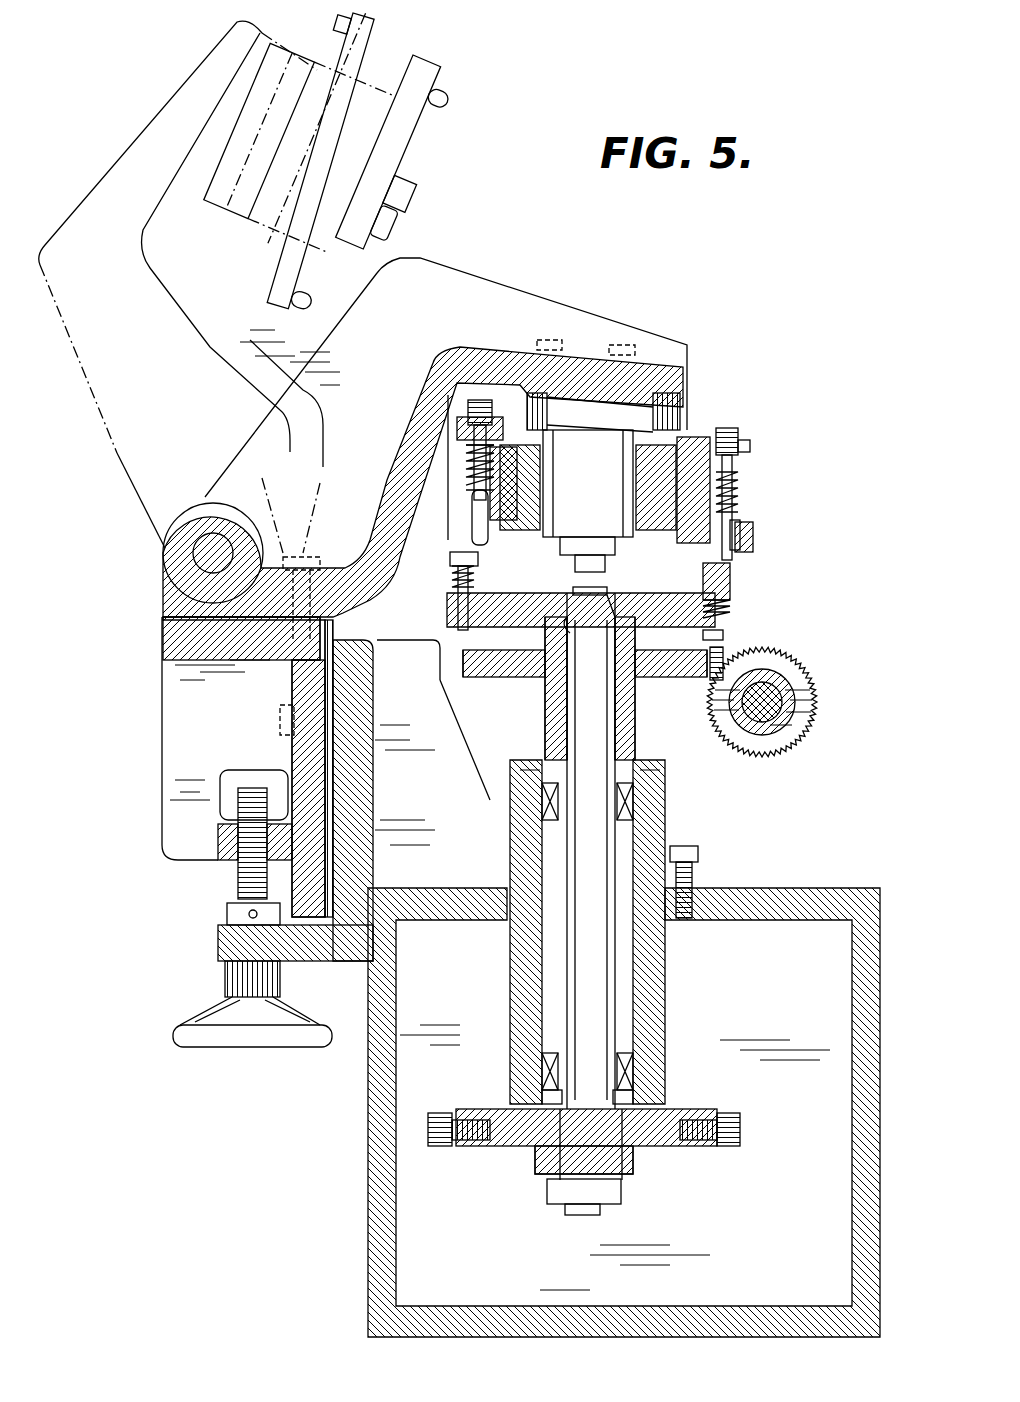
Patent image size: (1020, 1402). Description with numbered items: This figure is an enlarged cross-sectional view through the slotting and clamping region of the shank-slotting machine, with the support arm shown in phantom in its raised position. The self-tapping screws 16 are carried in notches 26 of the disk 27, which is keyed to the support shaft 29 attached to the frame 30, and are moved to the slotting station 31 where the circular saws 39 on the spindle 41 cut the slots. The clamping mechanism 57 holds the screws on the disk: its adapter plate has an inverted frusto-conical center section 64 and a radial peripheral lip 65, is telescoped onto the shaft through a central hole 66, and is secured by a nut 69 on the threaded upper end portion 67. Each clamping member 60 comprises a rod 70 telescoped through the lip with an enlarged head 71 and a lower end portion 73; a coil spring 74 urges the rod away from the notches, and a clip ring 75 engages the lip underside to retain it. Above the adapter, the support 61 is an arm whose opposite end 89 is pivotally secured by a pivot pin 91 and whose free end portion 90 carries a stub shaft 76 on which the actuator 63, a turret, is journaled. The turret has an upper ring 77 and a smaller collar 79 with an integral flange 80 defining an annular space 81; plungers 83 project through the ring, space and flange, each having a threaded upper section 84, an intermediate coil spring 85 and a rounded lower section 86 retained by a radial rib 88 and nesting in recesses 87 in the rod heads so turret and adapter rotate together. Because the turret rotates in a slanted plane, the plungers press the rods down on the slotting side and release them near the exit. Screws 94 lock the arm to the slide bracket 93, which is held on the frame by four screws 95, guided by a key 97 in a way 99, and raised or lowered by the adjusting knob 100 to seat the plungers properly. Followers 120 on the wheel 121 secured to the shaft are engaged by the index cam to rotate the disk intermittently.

The self-tapping screw 16 is at (723, 652).
The notches 26 is at (475, 680).
The disk 27 is at (482, 688).
The support shaft 29 is at (615, 995).
The frame 30 is at (362, 940).
The slotting station 31 is at (707, 686).
The circular saws 39 is at (800, 670).
The spindle 41 is at (770, 700).
The clamping mechanism 57 is at (800, 505).
The clamping members 60 is at (733, 602).
The support 61 is at (175, 108).
The actuator 63 is at (438, 57).
The center section 64 is at (512, 678).
The peripheral lip 65 is at (725, 635).
The central hole 66 is at (572, 615).
The threaded upper end portion 67 is at (607, 590).
The nut 69 is at (625, 618).
The rod 70 is at (462, 605).
The enlarged head 71 is at (452, 565).
The lower end portion 73 is at (443, 673).
The coil spring 74 is at (455, 585).
The clip ring 75 is at (433, 647).
The stub shaft 76 is at (606, 485).
The upper ring 77 is at (750, 445).
The collar 79 is at (740, 490).
The flange 80 is at (490, 485).
The annular space 81 is at (465, 428).
The plungers 83 is at (478, 520).
The threaded upper section 84 is at (480, 415).
The intermediate coil spring 85 is at (468, 455).
The lower section 86 is at (470, 540).
The recesses 87 is at (490, 540).
The radial rib 88 is at (470, 470).
The opposite end 89 is at (200, 505).
The free end portion 90 is at (690, 352).
The pivot pin 91 is at (193, 553).
The slide bracket 93 is at (163, 638).
The screws 94 is at (298, 530).
The screws 95 is at (280, 718).
The key 97 is at (350, 780).
The way 99 is at (322, 735).
The adjusting knob 100 is at (215, 1045).
The followers 120 is at (438, 1148).
The wheel 121 is at (680, 1148).